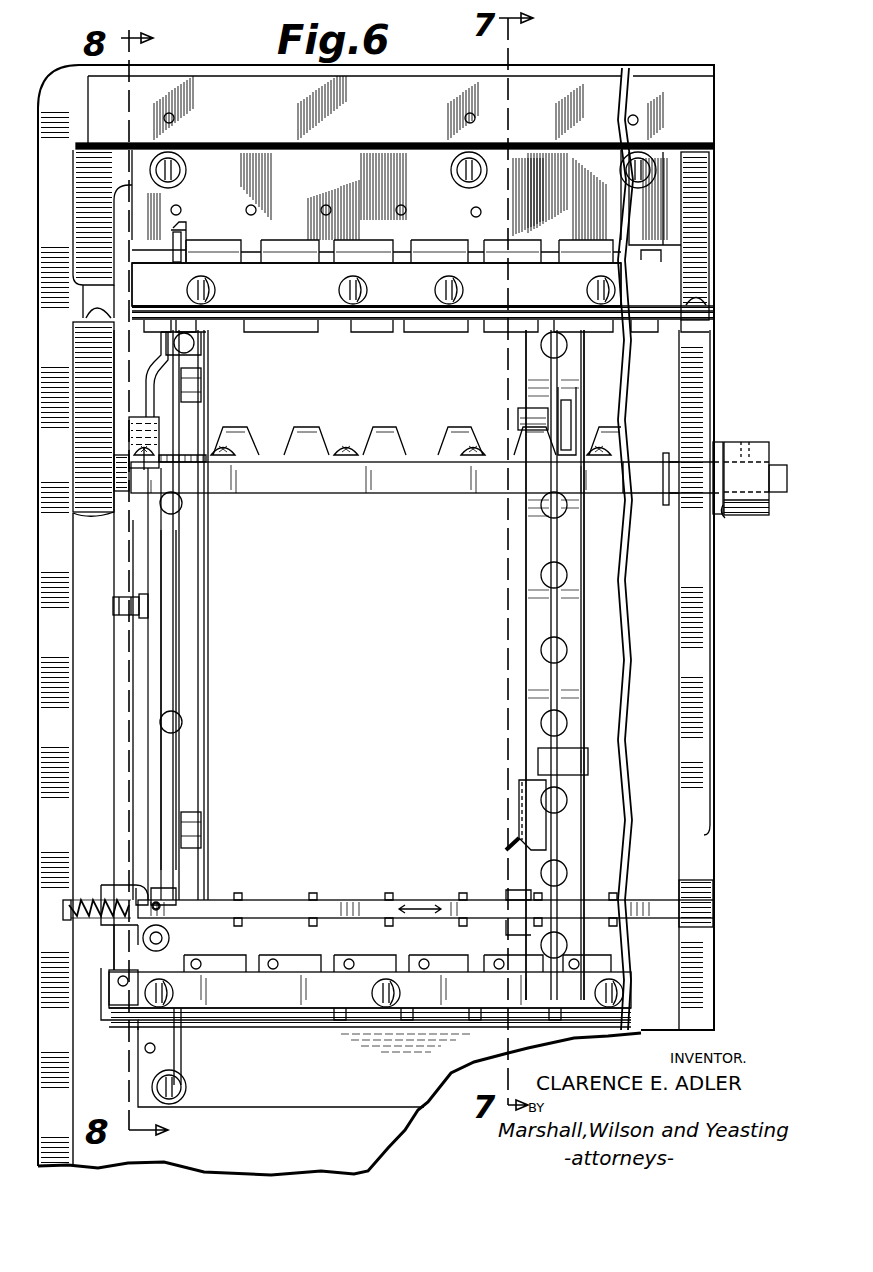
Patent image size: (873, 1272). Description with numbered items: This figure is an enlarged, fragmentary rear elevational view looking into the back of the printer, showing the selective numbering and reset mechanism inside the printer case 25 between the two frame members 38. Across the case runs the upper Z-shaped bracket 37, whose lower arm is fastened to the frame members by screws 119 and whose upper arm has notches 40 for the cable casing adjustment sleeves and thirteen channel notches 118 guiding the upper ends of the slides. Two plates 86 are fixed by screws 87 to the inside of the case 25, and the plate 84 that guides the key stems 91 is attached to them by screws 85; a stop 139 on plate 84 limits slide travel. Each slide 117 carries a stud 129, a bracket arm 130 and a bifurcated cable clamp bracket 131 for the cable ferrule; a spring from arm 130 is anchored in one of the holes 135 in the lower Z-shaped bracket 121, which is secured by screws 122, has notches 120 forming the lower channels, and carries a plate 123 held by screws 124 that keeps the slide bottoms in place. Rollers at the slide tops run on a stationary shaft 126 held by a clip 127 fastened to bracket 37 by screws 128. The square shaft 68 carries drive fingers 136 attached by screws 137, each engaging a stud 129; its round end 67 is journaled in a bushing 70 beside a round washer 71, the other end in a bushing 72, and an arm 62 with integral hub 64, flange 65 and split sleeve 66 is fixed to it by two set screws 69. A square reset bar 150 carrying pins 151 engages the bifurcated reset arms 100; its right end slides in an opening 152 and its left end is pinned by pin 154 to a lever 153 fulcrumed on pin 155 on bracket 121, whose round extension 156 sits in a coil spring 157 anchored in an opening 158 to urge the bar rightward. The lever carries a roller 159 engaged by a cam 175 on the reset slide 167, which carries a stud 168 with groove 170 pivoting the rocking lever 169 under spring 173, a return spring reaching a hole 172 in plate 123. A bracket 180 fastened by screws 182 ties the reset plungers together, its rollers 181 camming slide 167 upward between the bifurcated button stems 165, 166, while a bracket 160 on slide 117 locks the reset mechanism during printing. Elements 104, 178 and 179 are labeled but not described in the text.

The printer case 25 is at (606, 74).
The bracket 37 is at (690, 288).
The frame members 38 is at (76, 512).
The notch 40 is at (250, 330).
The arm 62 is at (716, 446).
The hub 64 is at (748, 518).
The flange 65 is at (722, 516).
The split sleeve 66 is at (755, 462).
The round end 67 is at (790, 490).
The square shaft 68 is at (365, 500).
The set screws 69 is at (755, 446).
The bushing 70 is at (710, 476).
The round washer 71 is at (666, 500).
The bushing 72 is at (118, 455).
The plate 84 is at (530, 352).
The screws 85 is at (181, 208).
The plates 86 is at (382, 158).
The screws 87 is at (178, 176).
The stems 91 is at (566, 346).
The reset arm 100 is at (508, 890).
The block 104 is at (540, 750).
The slide 117 is at (525, 548).
The notch 118 is at (176, 265).
The screws 119 is at (88, 308).
The notch 120 is at (190, 955).
The Z-shaped bracket 121 is at (326, 1108).
The screws 122 is at (185, 1082).
The plate 123 is at (290, 1022).
The screws 124 is at (146, 990).
The stationary shaft 126 is at (400, 247).
The clip 127 is at (292, 287).
The screws 128 is at (215, 285).
The stud 129 is at (518, 410).
The bracket arm 130 is at (572, 388).
The cable clamp bracket 131 is at (570, 410).
The hole 135 is at (200, 967).
The drive finger 136 is at (236, 428).
The screws 137 is at (222, 458).
The stop 139 is at (583, 650).
The square reset bar 150 is at (448, 898).
The pins 151 is at (388, 893).
The opening 152 is at (700, 895).
The lever 153 is at (140, 890).
The pin 154 is at (160, 905).
The pin 155 is at (144, 1050).
The round extension 156 is at (108, 900).
The coil spring 157 is at (78, 900).
The opening 158 is at (60, 910).
The roller 159 is at (140, 935).
The bracket 160 is at (520, 802).
The stem 165 is at (198, 345).
The stem 166 is at (172, 870).
The slide 167 is at (176, 232).
The stud 168 is at (116, 606).
The rocking lever 169 is at (145, 670).
The circumferential groove 170 is at (132, 610).
The hole 172 is at (116, 982).
The spring 173 is at (170, 558).
The cam 175 is at (168, 985).
The slide block 178 is at (135, 416).
The pin 179 is at (143, 465).
The bracket 180 is at (200, 604).
The rollers 181 is at (192, 380).
The screws 182 is at (180, 506).